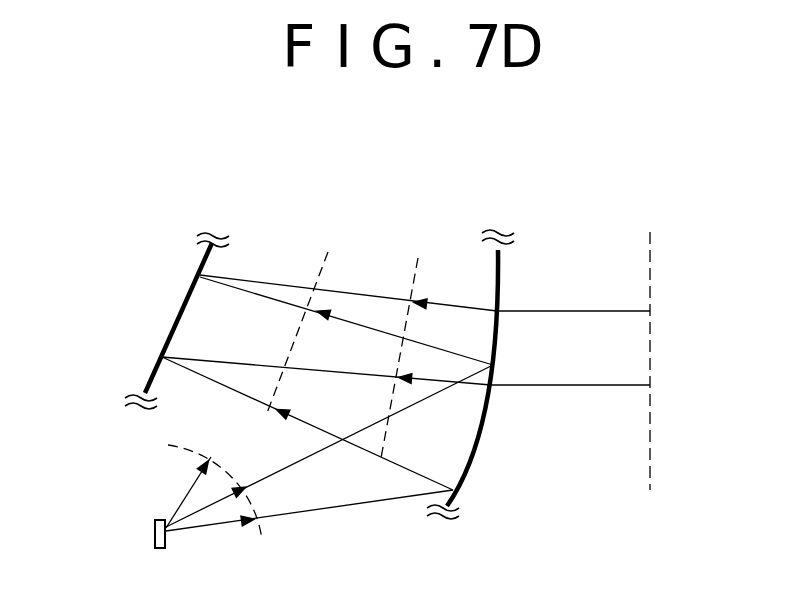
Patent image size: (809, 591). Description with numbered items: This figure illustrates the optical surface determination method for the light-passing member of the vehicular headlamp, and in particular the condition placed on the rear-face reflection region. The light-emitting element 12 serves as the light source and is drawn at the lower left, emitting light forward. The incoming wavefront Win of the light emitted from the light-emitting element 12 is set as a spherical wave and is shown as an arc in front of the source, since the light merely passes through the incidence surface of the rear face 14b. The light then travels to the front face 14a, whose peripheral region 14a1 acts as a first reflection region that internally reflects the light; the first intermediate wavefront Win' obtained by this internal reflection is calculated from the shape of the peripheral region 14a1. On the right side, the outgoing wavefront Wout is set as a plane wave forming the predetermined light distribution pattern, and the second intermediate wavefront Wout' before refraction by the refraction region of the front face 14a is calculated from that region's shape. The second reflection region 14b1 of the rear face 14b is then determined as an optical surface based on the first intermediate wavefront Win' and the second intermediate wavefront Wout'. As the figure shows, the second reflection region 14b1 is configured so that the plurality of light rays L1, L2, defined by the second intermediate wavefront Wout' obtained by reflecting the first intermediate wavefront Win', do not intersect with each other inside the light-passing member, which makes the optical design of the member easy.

The light-emitting element 12 is at (153, 527).
The rear face 14b is at (128, 321).
The second reflection region 14b1 is at (179, 318).
The peripheral region 14a1 is at (530, 374).
The front face 14a is at (476, 448).
The light ray L1 is at (270, 283).
The light ray L2 is at (242, 362).
The incoming wavefront Win is at (157, 471).
The first intermediate wavefront Win' is at (304, 300).
The second intermediate wavefront Wout' is at (412, 322).
The outgoing wavefront Wout is at (625, 360).